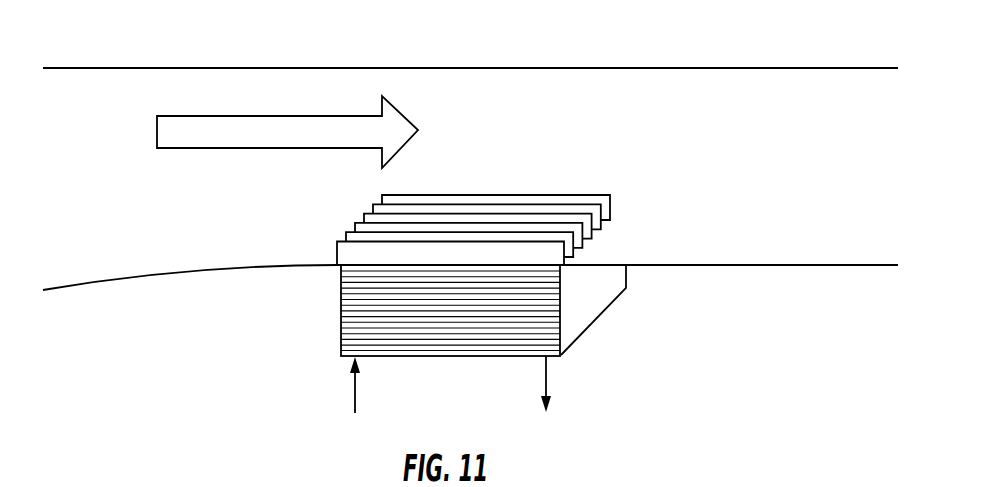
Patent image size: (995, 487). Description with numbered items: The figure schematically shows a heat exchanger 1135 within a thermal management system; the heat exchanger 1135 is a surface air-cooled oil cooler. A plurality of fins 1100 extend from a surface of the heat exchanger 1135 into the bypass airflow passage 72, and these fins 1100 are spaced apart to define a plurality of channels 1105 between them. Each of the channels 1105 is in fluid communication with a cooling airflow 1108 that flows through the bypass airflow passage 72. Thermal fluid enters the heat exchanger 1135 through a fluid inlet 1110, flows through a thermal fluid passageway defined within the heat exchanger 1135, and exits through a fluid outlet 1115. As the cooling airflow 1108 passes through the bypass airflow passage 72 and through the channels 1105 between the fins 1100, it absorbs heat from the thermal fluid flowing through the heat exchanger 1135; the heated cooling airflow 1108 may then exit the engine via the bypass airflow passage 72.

The bypass airflow passage 72 is at (531, 137).
The cooling airflow 1108 is at (233, 135).
The plurality of fins 1100 is at (388, 196).
The plurality of channels 1105 is at (581, 255).
The fluid inlet 1110 is at (355, 385).
The fluid outlet 1115 is at (548, 375).
The heat exchanger 1135 is at (587, 309).